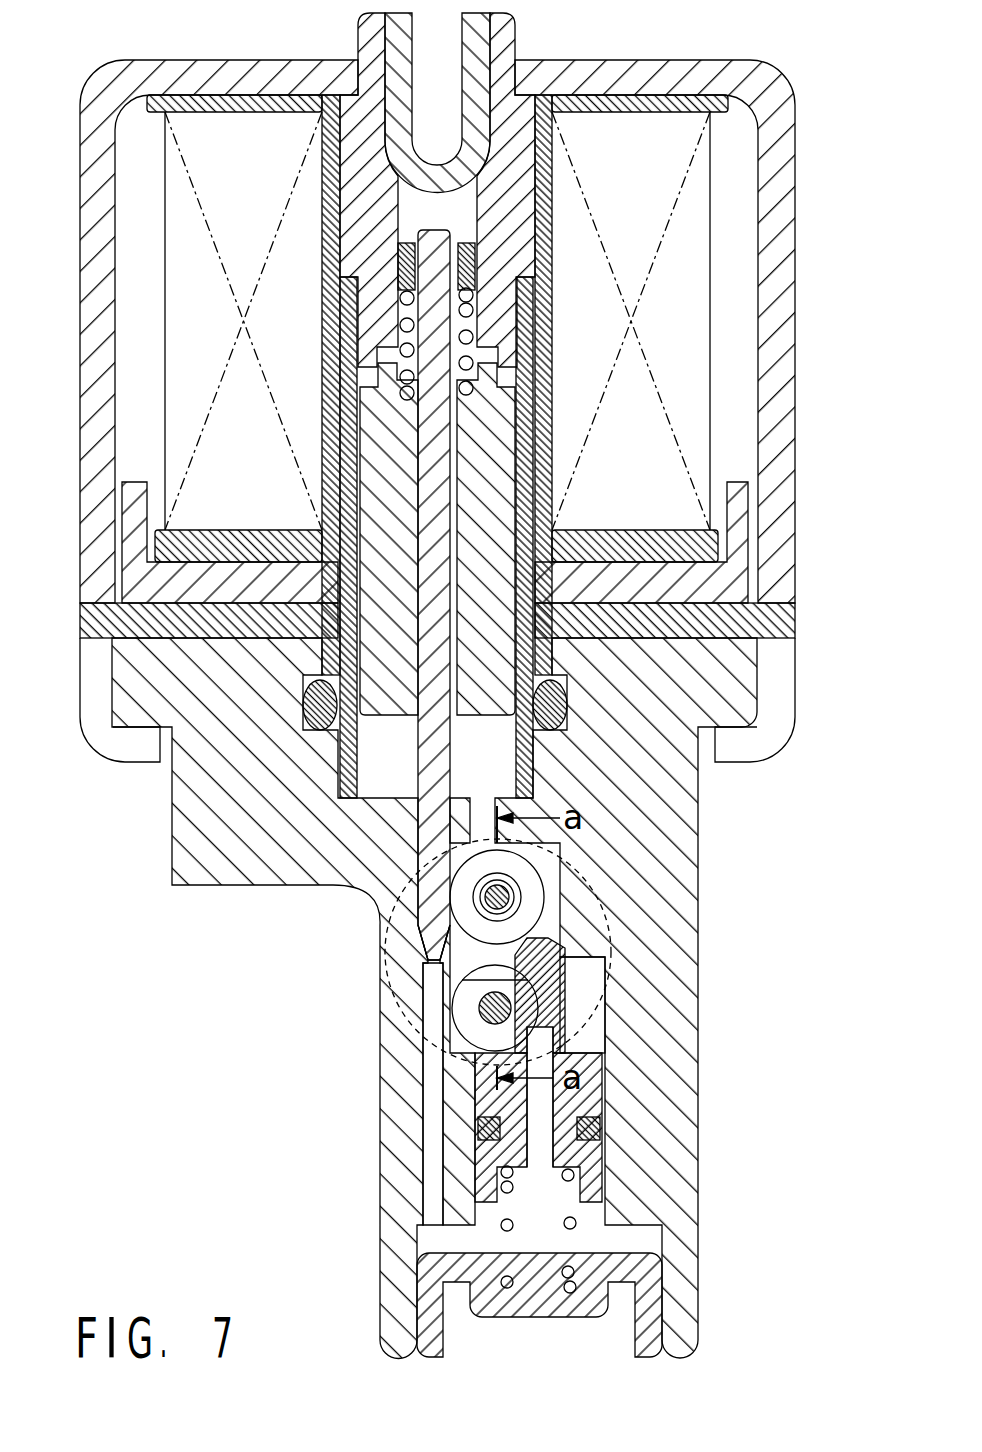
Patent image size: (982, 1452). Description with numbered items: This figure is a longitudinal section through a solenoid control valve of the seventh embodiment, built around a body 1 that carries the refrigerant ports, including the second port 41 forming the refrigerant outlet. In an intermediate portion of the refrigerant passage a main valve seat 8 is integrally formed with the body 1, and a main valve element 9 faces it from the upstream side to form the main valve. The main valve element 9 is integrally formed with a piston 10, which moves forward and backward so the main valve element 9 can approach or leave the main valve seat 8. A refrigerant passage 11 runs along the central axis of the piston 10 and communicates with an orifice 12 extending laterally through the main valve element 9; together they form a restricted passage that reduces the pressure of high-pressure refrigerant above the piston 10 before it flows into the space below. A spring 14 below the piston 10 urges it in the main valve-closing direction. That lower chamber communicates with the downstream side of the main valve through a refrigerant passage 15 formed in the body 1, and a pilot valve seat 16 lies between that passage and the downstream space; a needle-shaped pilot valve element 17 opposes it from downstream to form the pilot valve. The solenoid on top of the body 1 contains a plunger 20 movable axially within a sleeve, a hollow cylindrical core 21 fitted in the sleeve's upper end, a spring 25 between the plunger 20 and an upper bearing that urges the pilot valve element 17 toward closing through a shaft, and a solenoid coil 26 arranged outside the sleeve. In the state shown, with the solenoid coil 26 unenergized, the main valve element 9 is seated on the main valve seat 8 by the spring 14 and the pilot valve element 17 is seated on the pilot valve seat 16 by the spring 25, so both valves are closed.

The body 1 is at (700, 780).
The main valve seat 8 is at (560, 935).
The main valve element 9 is at (567, 985).
The piston 10 is at (603, 1103).
The refrigerant passage 11 is at (535, 1155).
The orifice 12 is at (568, 1040).
The spring 14 is at (577, 1227).
The refrigerant passage 15 is at (432, 1098).
The pilot valve seat 16 is at (428, 945).
The pilot valve element 17 is at (423, 930).
The plunger 20 is at (503, 447).
The core 21 is at (525, 200).
The spring 25 is at (480, 330).
The solenoid coil 26 is at (698, 272).
The second port 41 is at (612, 890).